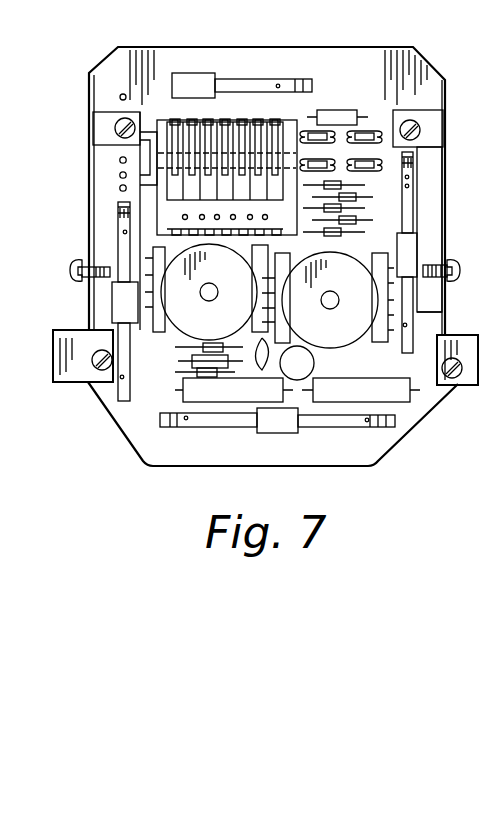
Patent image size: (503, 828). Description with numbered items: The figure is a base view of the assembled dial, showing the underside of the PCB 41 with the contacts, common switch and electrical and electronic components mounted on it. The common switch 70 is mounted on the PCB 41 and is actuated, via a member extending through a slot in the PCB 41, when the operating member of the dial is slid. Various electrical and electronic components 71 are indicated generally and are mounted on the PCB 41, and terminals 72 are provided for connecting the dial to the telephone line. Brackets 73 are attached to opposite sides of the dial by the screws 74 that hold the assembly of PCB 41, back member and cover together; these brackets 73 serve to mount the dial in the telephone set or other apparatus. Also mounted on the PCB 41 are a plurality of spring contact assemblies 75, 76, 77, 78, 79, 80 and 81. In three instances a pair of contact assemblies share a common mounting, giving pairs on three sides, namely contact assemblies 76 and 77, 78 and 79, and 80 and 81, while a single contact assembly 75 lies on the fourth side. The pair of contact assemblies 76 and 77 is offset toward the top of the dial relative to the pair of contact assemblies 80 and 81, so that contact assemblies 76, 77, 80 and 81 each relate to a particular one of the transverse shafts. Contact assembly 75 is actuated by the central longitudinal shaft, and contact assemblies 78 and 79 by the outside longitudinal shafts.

The PCB 41 is at (174, 455).
The common switch 70 is at (157, 104).
The electrical and electronic components 71 is at (173, 398).
The terminals 72 is at (357, 158).
The brackets 73 is at (90, 182).
The screws 74 is at (115, 128).
The spring contact assembly 75 is at (240, 78).
The spring contact assembly 76 is at (405, 187).
The spring contact assembly 77 is at (405, 302).
The spring contact assembly 78 is at (348, 420).
The spring contact assembly 79 is at (223, 420).
The spring contact assembly 80 is at (122, 403).
The spring contact assembly 81 is at (122, 238).